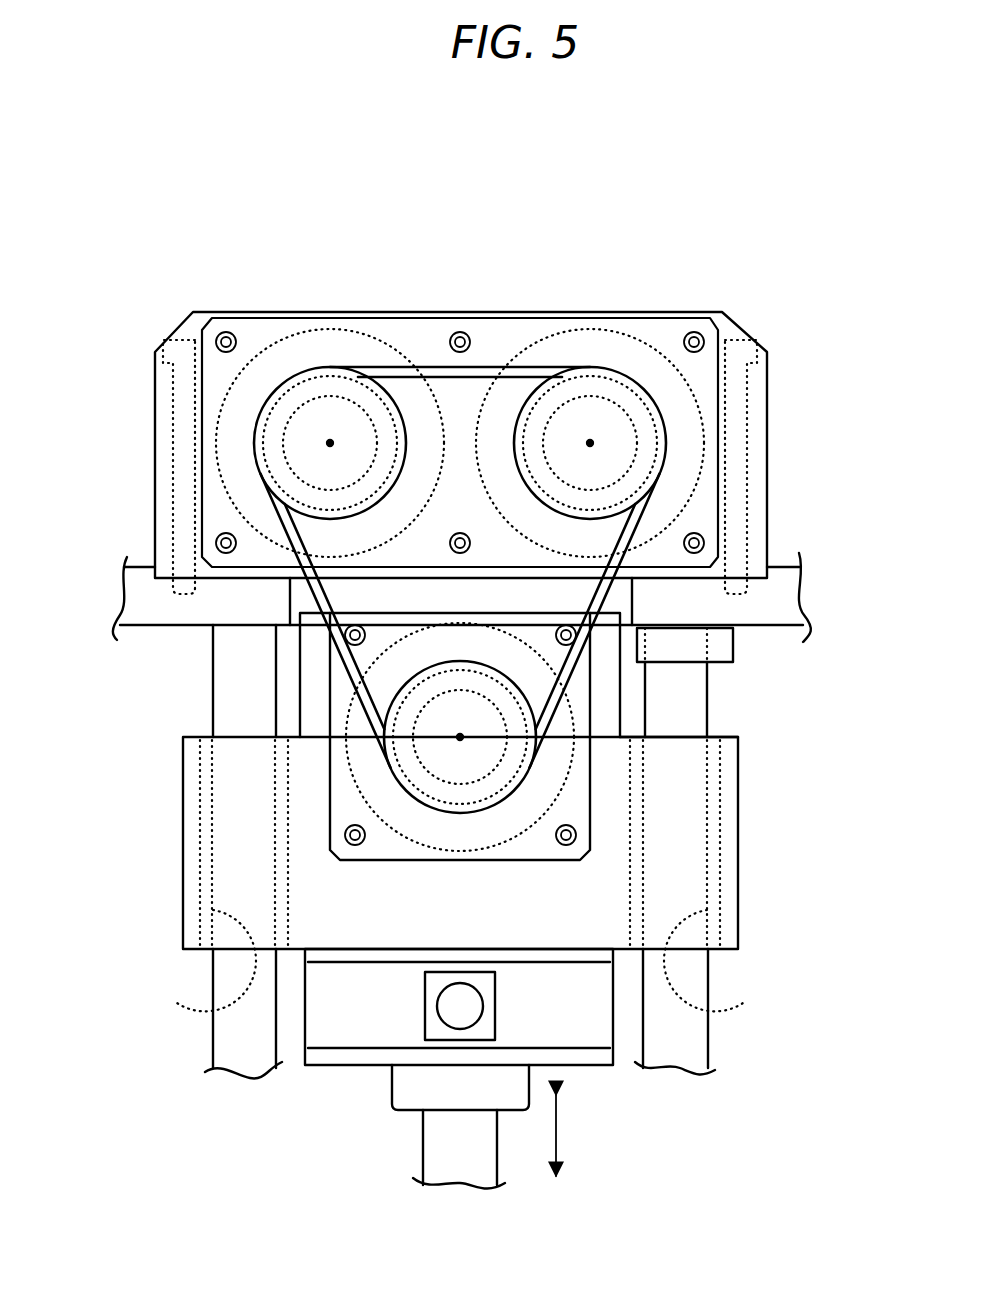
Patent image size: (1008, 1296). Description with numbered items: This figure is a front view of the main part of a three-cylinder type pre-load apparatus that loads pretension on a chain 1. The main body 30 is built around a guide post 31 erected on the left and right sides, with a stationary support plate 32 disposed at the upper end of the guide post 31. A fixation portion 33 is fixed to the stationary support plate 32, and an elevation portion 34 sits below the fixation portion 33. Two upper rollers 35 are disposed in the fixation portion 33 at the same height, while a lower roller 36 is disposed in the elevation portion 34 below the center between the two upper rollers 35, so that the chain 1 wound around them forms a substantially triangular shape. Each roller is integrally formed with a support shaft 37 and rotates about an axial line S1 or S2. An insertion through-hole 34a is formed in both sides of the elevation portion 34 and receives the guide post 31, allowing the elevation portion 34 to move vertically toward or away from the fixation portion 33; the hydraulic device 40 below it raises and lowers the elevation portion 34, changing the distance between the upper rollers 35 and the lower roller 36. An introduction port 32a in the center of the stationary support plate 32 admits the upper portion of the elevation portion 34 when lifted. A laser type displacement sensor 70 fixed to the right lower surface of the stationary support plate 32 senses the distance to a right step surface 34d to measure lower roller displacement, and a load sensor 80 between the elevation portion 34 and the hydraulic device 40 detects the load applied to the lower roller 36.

The chain 1 is at (408, 372).
The main body 30 is at (750, 224).
The guide post 31 is at (233, 698).
The stationary support plate 32 is at (143, 580).
The introduction port 32a is at (600, 605).
The fixation portion 33 is at (759, 315).
The elevation portion 34 is at (735, 862).
The insertion through-hole 34a is at (178, 1003).
The right step surface 34d is at (677, 734).
The upper roller 35 is at (322, 383).
The lower roller 36 is at (492, 775).
The support shaft 37 is at (252, 356).
The hydraulic device 40 is at (383, 1089).
The laser type displacement sensor 70 is at (737, 648).
The load sensor 80 is at (568, 1013).
The axial line S1 is at (330, 443).
The axial line S2 is at (460, 737).